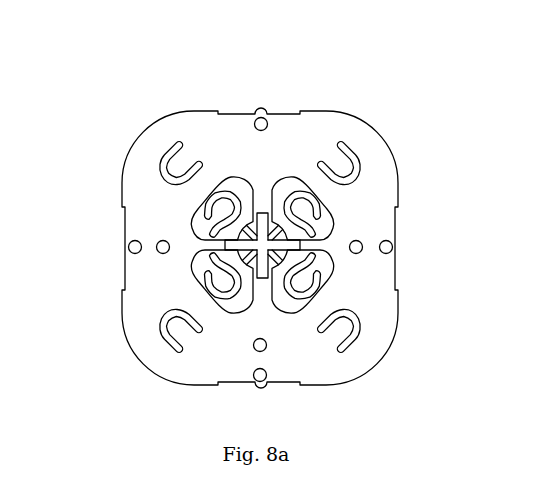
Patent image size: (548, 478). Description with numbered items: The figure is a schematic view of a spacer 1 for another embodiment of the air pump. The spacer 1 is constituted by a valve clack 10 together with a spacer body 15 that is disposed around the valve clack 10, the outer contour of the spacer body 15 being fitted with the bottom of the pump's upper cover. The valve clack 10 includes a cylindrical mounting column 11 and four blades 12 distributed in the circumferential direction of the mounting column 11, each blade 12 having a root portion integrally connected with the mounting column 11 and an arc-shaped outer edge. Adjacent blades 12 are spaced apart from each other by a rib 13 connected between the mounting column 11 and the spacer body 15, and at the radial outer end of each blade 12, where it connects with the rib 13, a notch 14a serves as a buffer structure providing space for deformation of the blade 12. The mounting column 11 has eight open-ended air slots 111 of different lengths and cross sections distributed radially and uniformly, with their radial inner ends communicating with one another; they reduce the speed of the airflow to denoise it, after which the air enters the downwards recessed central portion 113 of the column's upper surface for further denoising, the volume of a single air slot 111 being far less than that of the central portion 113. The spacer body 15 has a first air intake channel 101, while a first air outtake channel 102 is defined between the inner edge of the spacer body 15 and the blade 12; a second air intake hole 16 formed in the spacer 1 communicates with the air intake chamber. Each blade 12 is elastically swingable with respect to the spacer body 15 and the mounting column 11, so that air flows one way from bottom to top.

The spacer 1 is at (286, 39).
The valve clack 10 is at (215, 76).
The mounting column 11 is at (269, 213).
The blade 12 is at (301, 208).
The rib 13 is at (257, 213).
The notch 14a is at (282, 297).
The spacer body 15 is at (372, 158).
The second air intake hole 16 is at (298, 252).
The first air intake channel 101 is at (162, 330).
The first air outtake channel 102 is at (197, 223).
The air slot 111 is at (294, 250).
The central portion 113 is at (263, 246).